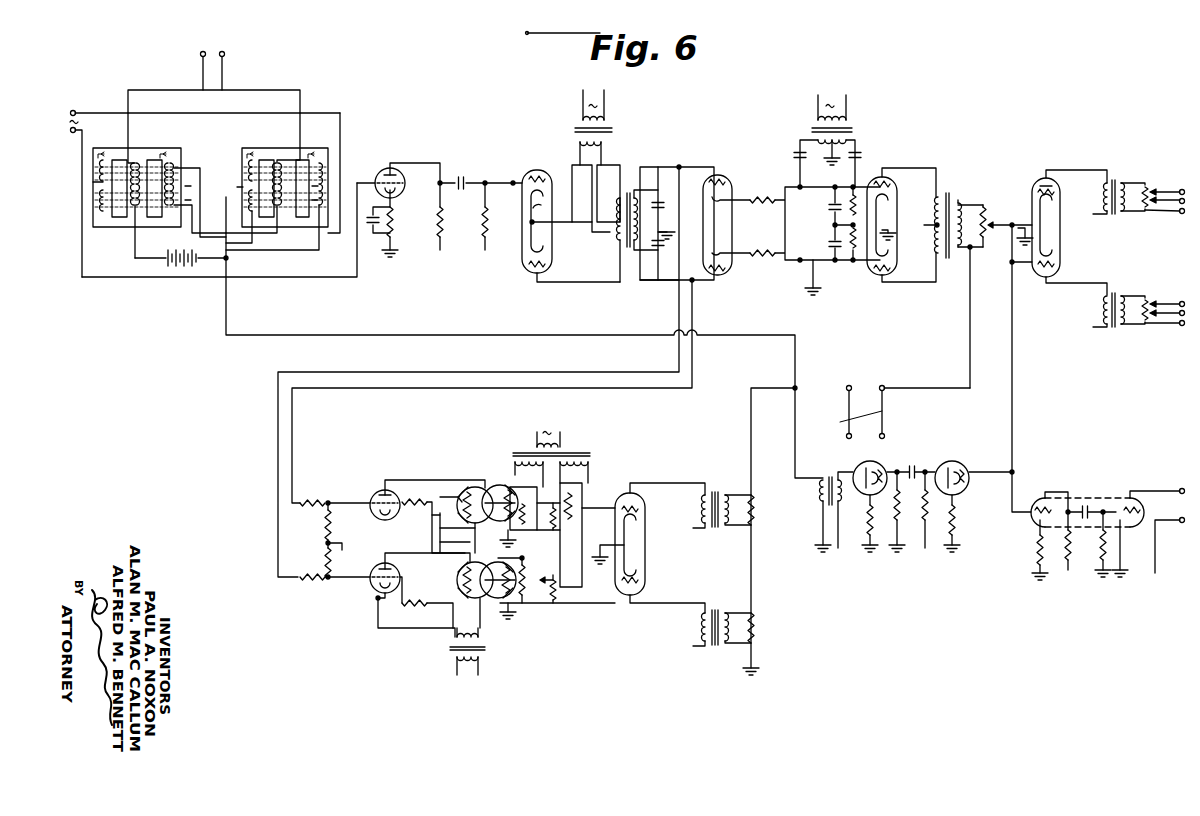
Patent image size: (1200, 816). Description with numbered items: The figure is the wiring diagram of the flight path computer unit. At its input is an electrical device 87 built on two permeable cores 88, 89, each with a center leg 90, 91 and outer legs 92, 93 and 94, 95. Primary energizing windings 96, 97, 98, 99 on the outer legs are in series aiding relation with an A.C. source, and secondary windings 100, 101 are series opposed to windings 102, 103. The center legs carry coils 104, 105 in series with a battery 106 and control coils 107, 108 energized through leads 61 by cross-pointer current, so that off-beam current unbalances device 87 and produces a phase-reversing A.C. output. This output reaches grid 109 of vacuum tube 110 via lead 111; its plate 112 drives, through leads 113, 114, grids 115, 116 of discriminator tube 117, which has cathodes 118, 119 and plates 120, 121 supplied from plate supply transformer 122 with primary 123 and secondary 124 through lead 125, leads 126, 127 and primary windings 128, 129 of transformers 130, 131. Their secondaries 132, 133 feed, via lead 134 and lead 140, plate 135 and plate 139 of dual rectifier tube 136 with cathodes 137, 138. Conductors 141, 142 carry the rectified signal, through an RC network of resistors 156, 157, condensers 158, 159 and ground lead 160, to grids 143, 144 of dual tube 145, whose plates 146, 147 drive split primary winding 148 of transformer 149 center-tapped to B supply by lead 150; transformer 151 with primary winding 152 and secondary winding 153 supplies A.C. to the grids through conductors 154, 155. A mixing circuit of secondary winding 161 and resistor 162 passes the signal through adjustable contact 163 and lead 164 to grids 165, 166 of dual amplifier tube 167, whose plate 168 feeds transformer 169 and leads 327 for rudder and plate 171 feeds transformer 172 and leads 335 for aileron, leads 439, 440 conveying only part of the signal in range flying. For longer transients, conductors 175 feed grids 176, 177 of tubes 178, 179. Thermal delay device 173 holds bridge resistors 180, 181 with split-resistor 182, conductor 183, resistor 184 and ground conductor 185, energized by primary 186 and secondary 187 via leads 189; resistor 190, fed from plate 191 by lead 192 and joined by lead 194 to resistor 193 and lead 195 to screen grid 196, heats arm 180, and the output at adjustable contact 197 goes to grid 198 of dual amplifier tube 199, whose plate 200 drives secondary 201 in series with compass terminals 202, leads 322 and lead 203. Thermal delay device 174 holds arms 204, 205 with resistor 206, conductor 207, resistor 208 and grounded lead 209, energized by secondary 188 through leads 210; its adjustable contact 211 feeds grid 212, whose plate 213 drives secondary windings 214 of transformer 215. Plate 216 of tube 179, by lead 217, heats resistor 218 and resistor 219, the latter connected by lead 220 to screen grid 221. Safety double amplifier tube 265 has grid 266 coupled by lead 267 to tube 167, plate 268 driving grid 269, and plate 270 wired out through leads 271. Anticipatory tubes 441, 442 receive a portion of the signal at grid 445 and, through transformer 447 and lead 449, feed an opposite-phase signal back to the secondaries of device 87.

The leads 61 is at (203, 71).
The electrical device 87 is at (213, 135).
The permeable core 88 is at (108, 227).
The permeable core 89 is at (326, 230).
The center leg 90 is at (93, 182).
The center leg 91 is at (306, 189).
The outer leg 92 is at (100, 148).
The outer leg 93 is at (204, 188).
The outer leg 94 is at (234, 201).
The outer leg 95 is at (328, 150).
The primary energizing winding 96 is at (96, 170).
The primary energizing winding 97 is at (173, 166).
The primary energizing winding 98 is at (242, 170).
The primary energizing winding 99 is at (330, 168).
The secondary winding 100 is at (96, 202).
The secondary winding 101 is at (208, 202).
The secondary winding 102 is at (232, 216).
The secondary winding 103 is at (320, 220).
The coil 104 is at (139, 217).
The coil 105 is at (280, 232).
The battery 106 is at (183, 266).
The control coil 107 is at (140, 160).
The control coil 108 is at (279, 162).
The grid 109 is at (397, 192).
The vacuum tube 110 is at (400, 183).
The lead 111 is at (136, 278).
The plate 112 is at (390, 168).
The lead 113 is at (487, 181).
The lead 114 is at (521, 262).
The grid 115 is at (546, 180).
The grid 116 is at (524, 270).
The discriminator tube 117 is at (546, 242).
The cathode 118 is at (545, 206).
The cathode 119 is at (548, 263).
The plate 120 is at (537, 171).
The plate 121 is at (535, 280).
The plate supply transformer 122 is at (638, 133).
The primary 123 is at (604, 116).
The secondary 124 is at (576, 132).
The lead 125 is at (580, 143).
The lead 126 is at (612, 165).
The lead 127 is at (588, 233).
The primary winding 128 is at (618, 222).
The primary winding 129 is at (618, 268).
The transformer 130 is at (632, 229).
The transformer 131 is at (641, 220).
The secondary 132 is at (650, 199).
The secondary 133 is at (650, 250).
The lead 134 is at (681, 166).
The plate 135 is at (724, 179).
The dual rectifier tube 136 is at (760, 245).
The cathode 137 is at (728, 198).
The cathode 138 is at (730, 256).
The plate 139 is at (723, 276).
The lead 140 is at (660, 282).
The conductor 141 is at (798, 188).
The conductor 142 is at (797, 261).
The grid 143 is at (897, 181).
The grid 144 is at (880, 277).
The dual tube 145 is at (895, 203).
The plate 146 is at (881, 177).
The plate 147 is at (891, 276).
The split primary winding 148 is at (942, 198).
The transformer 149 is at (966, 270).
The lead 150 is at (936, 228).
The transformer 151 is at (807, 136).
The primary winding 152 is at (846, 116).
The secondary winding 153 is at (850, 141).
The conductor 154 is at (800, 247).
The conductor 155 is at (853, 160).
The resistor 156 is at (845, 204).
The resistor 157 is at (853, 263).
The condenser 158 is at (834, 210).
The condenser 159 is at (835, 254).
The lead 160 is at (813, 284).
The secondary winding 161 is at (966, 206).
The resistor 162 is at (985, 250).
The adjustable contact 163 is at (1008, 222).
The lead 164 is at (1031, 190).
The grid 165 is at (1054, 186).
The grid 166 is at (1058, 267).
The dual amplifier tube 167 is at (1062, 229).
The plate 168 is at (1044, 190).
The transformer 169 is at (1134, 177).
The plate 171 is at (1040, 280).
The transformer 172 is at (1134, 289).
The thermal delay device 173 is at (488, 538).
The thermal delay device 174 is at (485, 608).
The conductors 175 is at (435, 387).
The grid 176 is at (372, 497).
The grid 177 is at (370, 588).
The tube 178 is at (372, 510).
The tube 179 is at (383, 565).
The resistor 180 is at (498, 486).
The resistor 181 is at (522, 508).
The split-resistor 182 is at (528, 500).
The conductor 183 is at (561, 535).
The resistor 184 is at (568, 519).
The ground conductor 185 is at (514, 540).
The primary 186 is at (560, 433).
The secondary 187 is at (530, 446).
The secondary 188 is at (590, 461).
The leads 189 is at (517, 462).
The resistor 190 is at (470, 488).
The plate 191 is at (381, 490).
The lead 192 is at (405, 480).
The resistor 193 is at (462, 571).
The lead 194 is at (440, 529).
The lead 195 is at (440, 543).
The screen grid 196 is at (405, 502).
The adjustable contact 197 is at (600, 502).
The grid 198 is at (640, 507).
The dual amplifier tube 199 is at (648, 543).
The plate 200 is at (636, 490).
The secondary 201 is at (745, 527).
The terminals 202 is at (867, 385).
The lead 203 is at (770, 388).
The resistor 204 is at (502, 578).
The resistor 205 is at (502, 606).
The resistor 206 is at (527, 567).
The conductor 207 is at (540, 590).
The resistor 208 is at (582, 603).
The grounded lead 209 is at (536, 604).
The leads 210 is at (624, 538).
The adjustable contact 211 is at (564, 587).
The grid 212 is at (645, 583).
The plate 213 is at (636, 600).
The secondary windings 214 is at (744, 665).
The transformer 215 is at (731, 604).
The plate 216 is at (365, 575).
The lead 217 is at (433, 516).
The resistor 218 is at (449, 497).
The resistor 219 is at (460, 590).
The lead 220 is at (420, 612).
The screen grid 221 is at (398, 572).
The double amplifier tube 265 is at (1092, 498).
The grid 266 is at (1038, 524).
The lead 267 is at (1014, 396).
The plate 268 is at (1041, 498).
The grid 269 is at (1137, 502).
The plate 270 is at (1129, 500).
The leads 271 is at (1166, 523).
The leads 322 is at (845, 414).
The leads 327 is at (1180, 190).
The leads 335 is at (1181, 302).
The lead 439 is at (1170, 211).
The lead 440 is at (1168, 324).
The tube 441 is at (882, 467).
The tube 442 is at (958, 466).
The grid 445 is at (969, 480).
The transformer 447 is at (845, 473).
The lead 449 is at (428, 335).